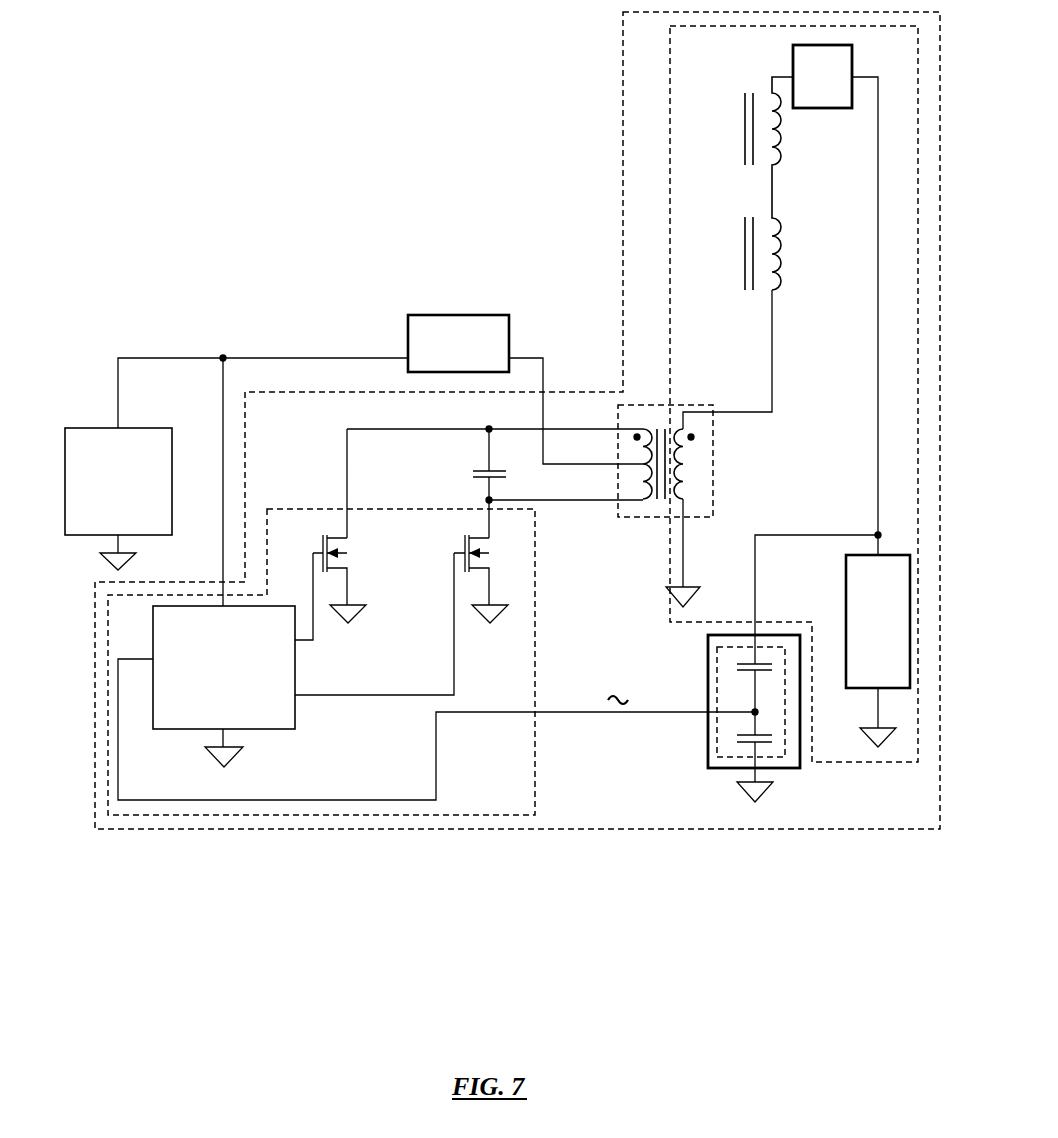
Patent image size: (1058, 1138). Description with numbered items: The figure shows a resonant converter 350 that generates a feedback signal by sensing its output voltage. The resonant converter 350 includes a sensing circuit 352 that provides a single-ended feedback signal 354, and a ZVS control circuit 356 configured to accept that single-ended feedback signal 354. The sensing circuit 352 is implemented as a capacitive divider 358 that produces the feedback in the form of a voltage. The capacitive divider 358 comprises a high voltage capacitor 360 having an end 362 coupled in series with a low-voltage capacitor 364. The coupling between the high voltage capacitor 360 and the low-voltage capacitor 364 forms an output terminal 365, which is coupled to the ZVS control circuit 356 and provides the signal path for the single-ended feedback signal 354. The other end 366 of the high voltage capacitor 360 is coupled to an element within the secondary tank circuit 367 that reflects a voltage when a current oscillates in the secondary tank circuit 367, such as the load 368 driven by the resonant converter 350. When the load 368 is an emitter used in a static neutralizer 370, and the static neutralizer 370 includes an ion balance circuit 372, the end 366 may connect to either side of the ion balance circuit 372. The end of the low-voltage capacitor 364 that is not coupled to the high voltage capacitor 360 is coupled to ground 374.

The resonant converter 350 is at (332, 394).
The sensing circuit 352 is at (775, 630).
The single-ended feedback signal 354 is at (622, 690).
The ZVS control circuit 356 is at (193, 631).
The capacitive divider 358 is at (719, 730).
The high voltage capacitor 360 is at (732, 662).
The end of high voltage capacitor 362 is at (753, 688).
The low-voltage capacitor 364 is at (738, 744).
The output terminal 365 is at (757, 713).
The other end of high voltage capacitor 366 is at (755, 567).
The secondary tank circuit 367 is at (728, 26).
The load 368 is at (863, 610).
The static neutralizer 370 is at (354, 62).
The ion balance circuit 372 is at (822, 76).
The ground 374 is at (112, 564).